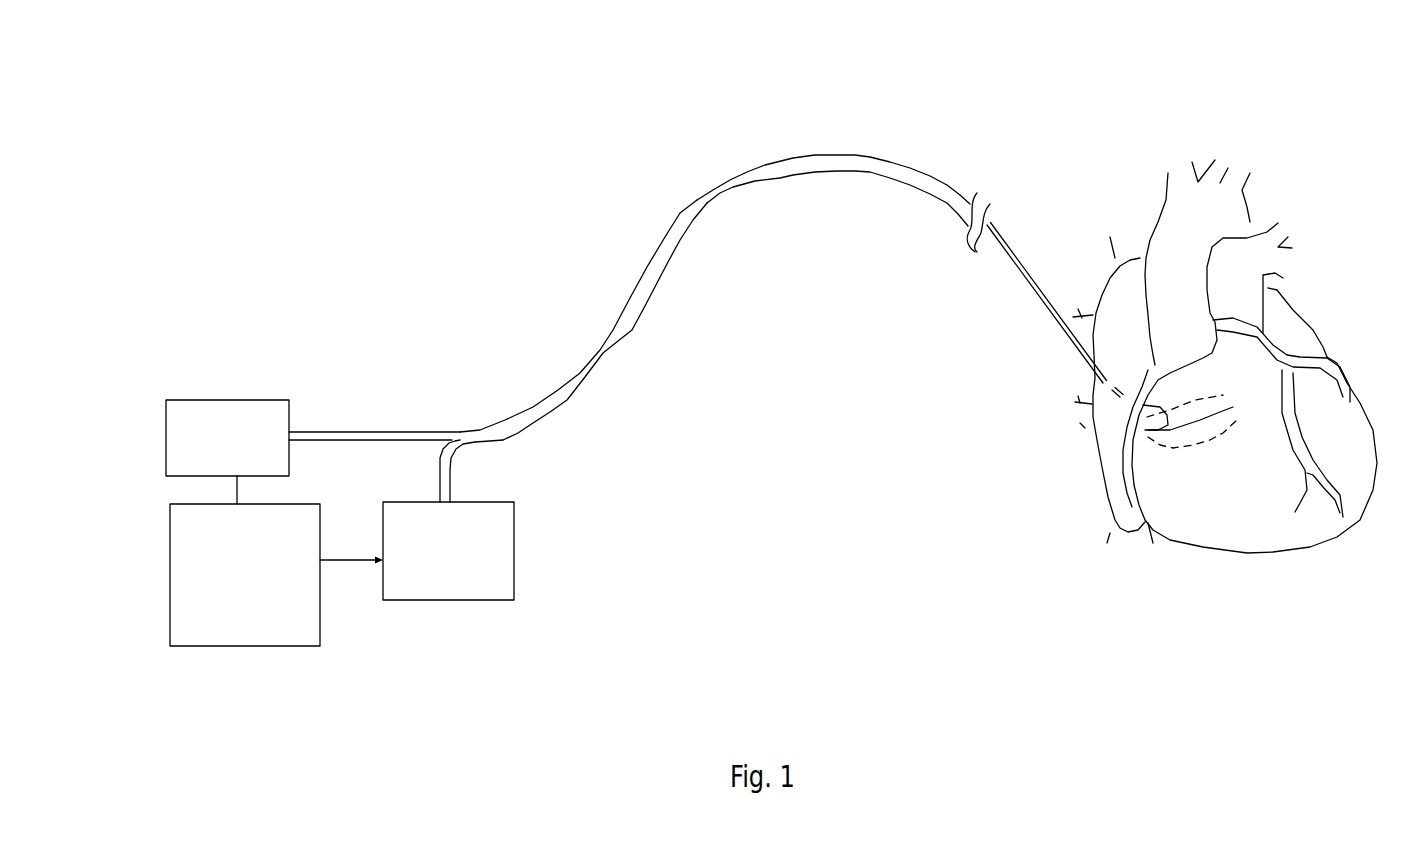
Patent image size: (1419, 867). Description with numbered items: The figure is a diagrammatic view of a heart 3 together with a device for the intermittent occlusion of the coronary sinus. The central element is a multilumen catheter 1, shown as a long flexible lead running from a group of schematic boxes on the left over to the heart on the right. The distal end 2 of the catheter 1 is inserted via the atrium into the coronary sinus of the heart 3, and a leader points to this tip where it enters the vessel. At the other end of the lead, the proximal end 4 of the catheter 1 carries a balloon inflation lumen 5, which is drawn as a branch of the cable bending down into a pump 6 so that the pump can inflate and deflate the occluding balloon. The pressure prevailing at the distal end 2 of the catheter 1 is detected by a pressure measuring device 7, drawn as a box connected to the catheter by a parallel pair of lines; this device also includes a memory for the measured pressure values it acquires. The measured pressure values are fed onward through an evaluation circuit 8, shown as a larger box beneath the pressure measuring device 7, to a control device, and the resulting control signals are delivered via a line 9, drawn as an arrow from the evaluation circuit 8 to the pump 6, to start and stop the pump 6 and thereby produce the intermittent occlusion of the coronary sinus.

The multilumen catheter 1 is at (697, 212).
The distal end 2 is at (1118, 395).
The heart 3 is at (1347, 333).
The proximal end 4 is at (552, 458).
The balloon inflation lumen 5 is at (452, 465).
The pump 6 is at (453, 600).
The pressure measuring device 7 is at (166, 440).
The evaluation circuit 8 is at (168, 593).
The line 9 is at (345, 562).